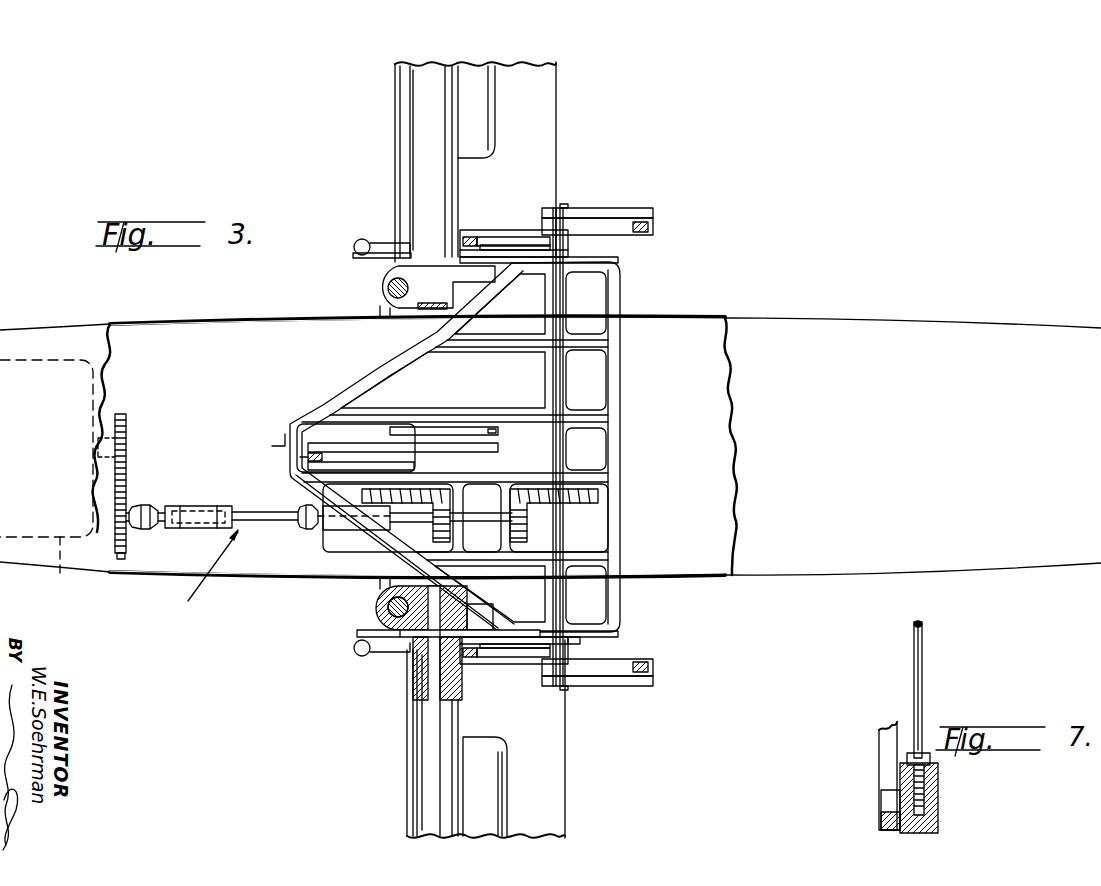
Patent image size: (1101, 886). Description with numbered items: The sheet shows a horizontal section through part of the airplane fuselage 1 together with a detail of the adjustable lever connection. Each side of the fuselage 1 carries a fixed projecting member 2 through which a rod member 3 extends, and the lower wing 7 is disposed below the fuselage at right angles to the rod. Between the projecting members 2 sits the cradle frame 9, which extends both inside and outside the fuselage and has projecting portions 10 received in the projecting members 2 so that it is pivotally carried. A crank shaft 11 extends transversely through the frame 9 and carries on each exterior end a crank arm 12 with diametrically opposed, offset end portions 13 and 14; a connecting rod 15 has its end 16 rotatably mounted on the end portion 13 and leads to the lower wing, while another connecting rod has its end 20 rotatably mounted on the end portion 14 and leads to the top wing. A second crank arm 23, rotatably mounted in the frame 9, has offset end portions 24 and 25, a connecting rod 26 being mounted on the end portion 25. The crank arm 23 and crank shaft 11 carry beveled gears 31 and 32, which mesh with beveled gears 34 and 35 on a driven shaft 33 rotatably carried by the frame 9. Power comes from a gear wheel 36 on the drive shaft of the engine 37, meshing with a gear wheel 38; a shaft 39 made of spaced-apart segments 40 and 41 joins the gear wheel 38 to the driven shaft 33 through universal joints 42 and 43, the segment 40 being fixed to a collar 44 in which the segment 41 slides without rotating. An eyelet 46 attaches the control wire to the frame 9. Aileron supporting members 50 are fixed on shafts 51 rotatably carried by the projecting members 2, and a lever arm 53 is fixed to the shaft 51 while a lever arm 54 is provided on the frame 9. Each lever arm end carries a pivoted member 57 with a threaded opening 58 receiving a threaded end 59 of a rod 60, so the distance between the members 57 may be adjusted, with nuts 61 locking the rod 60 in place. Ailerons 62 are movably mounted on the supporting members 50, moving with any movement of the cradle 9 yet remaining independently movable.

In FIG. 3, the airplane fuselage 1 is at (706, 318).
In FIG. 3, the projecting member 2 is at (378, 278).
In FIG. 3, the rod member 3 is at (395, 288).
In FIG. 3, the lower wing 7 is at (555, 108).
In FIG. 3, the frame member or cradle frame 9 is at (622, 445).
In FIG. 3, the projecting portion 10 is at (482, 616).
In FIG. 3, the crank shaft 11 is at (563, 408).
In FIG. 3, the crank arm 12 is at (588, 210).
In FIG. 3, the end portion 13 is at (472, 230).
In FIG. 3, the end portion 14 is at (642, 212).
In FIG. 3, the connecting rod 15 is at (512, 237).
In FIG. 3, the end 16 is at (478, 238).
In FIG. 3, the end 20 is at (650, 228).
In FIG. 3, the crank arm 23 is at (410, 443).
In FIG. 3, the end portion 24 is at (470, 427).
In FIG. 3, the end portion 25 is at (314, 453).
In FIG. 3, the connecting rod 26 is at (300, 457).
In FIG. 3, the beveled gear 31 is at (298, 494).
In FIG. 3, the beveled gear 32 is at (602, 492).
In FIG. 3, the driven shaft 33 is at (398, 520).
In FIG. 3, the beveled gear 34 is at (416, 552).
In FIG. 3, the beveled gear 35 is at (528, 538).
In FIG. 3, the gear wheel 36 is at (126, 420).
In FIG. 3, the engine 37 is at (60, 582).
In FIG. 3, the gear wheel 38 is at (121, 558).
In FIG. 3, the shaft 39 is at (209, 577).
In FIG. 3, the segment 40 is at (163, 512).
In FIG. 3, the segment 41 is at (252, 512).
In FIG. 3, the universal joint 42 is at (147, 507).
In FIG. 3, the universal joint 43 is at (302, 528).
In FIG. 3, the collar 44 is at (205, 528).
In FIG. 3, the eyelet 46 is at (276, 446).
In FIG. 3, the aileron supporting member 50 is at (425, 152).
In FIG. 3, the shaft 51 is at (432, 680).
In FIG. 3, the lever arm 53 is at (360, 656).
In FIG. 3, the lever arm 54 is at (500, 637).
In FIG. 7, the lever arm 54 is at (880, 746).
In FIG. 3, the member 57 is at (398, 634).
In FIG. 7, the member 57 is at (940, 820).
In FIG. 7, the threaded opening 58 is at (926, 808).
In FIG. 7, the threaded end 59 is at (902, 786).
In FIG. 7, the rod 60 is at (922, 662).
In FIG. 7, the nut 61 is at (926, 753).
In FIG. 3, the aileron 62 is at (485, 132).